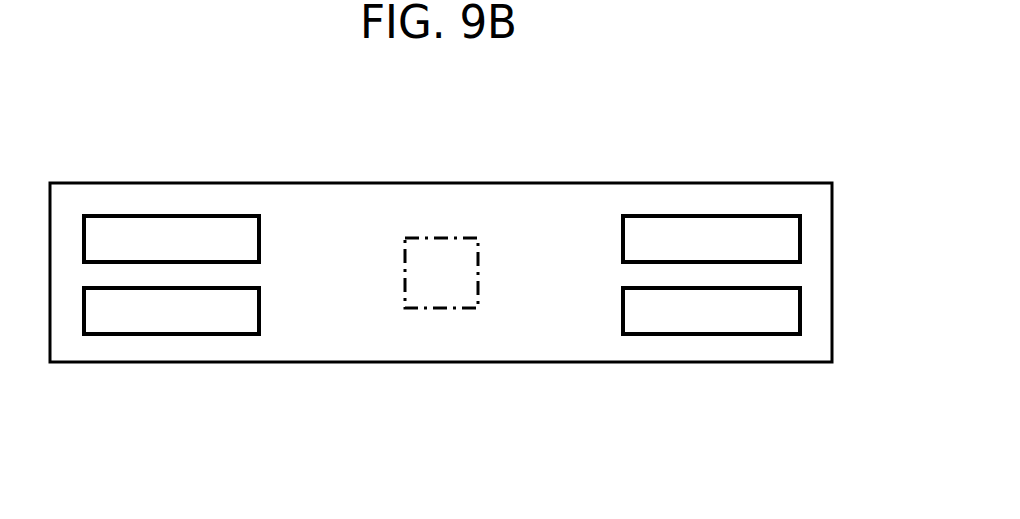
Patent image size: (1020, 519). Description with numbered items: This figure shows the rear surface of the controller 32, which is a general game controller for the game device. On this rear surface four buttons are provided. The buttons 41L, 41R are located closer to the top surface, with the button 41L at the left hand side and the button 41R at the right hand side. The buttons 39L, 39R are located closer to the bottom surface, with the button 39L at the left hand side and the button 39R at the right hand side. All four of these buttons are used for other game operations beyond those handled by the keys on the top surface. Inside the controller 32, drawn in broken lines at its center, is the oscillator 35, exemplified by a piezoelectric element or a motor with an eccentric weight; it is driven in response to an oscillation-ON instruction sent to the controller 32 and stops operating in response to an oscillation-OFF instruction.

The controller 32 is at (450, 363).
The oscillator 35 is at (478, 270).
The button 39L is at (171, 215).
The button 39R is at (712, 215).
The button 41L is at (173, 336).
The button 41R is at (715, 336).